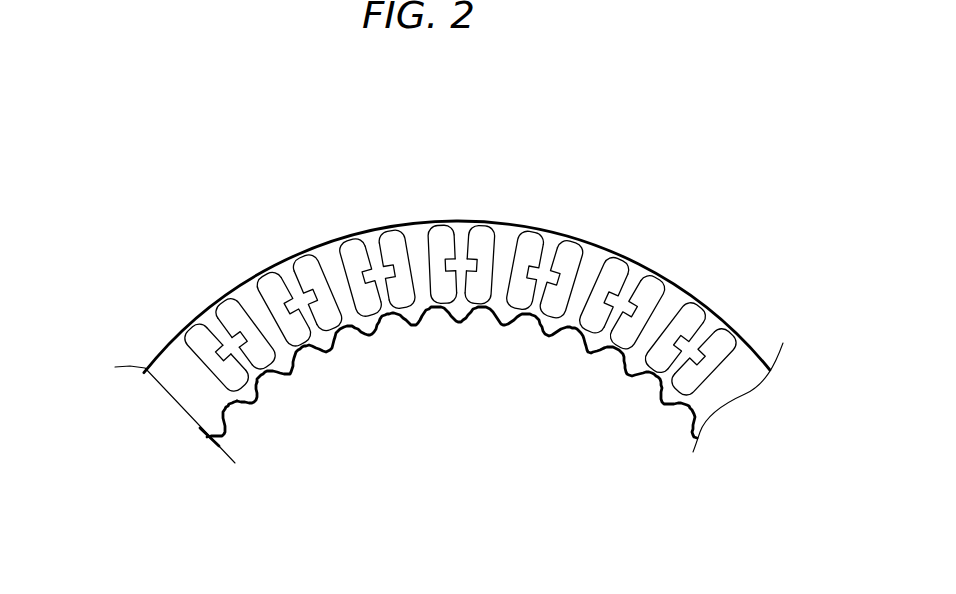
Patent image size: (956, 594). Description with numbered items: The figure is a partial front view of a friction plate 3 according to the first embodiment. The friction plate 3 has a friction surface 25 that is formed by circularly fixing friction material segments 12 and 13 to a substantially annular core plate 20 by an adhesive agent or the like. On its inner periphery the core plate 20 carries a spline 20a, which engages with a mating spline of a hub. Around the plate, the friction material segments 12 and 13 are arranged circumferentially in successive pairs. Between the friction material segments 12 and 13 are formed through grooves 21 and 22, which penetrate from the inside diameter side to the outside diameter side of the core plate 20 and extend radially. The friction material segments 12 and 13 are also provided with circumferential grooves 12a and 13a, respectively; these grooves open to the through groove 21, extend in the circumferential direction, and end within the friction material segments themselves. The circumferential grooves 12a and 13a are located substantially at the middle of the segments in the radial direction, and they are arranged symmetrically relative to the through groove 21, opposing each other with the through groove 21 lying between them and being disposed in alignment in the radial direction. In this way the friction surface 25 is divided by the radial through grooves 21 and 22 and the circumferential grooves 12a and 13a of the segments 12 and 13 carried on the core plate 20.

The friction plate 3 is at (628, 206).
The friction material segment 12 is at (177, 357).
The circumferential groove 12a is at (237, 390).
The friction material segment 13 is at (487, 238).
The circumferential groove 13a is at (270, 372).
The core plate 20 is at (308, 258).
The spline 20a is at (613, 358).
The through groove 21 is at (467, 238).
The through groove 22 is at (267, 330).
The friction surface 25 is at (394, 250).